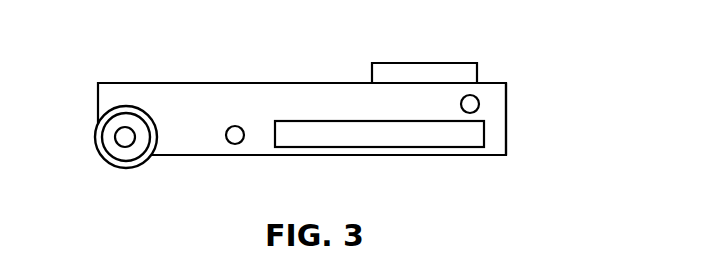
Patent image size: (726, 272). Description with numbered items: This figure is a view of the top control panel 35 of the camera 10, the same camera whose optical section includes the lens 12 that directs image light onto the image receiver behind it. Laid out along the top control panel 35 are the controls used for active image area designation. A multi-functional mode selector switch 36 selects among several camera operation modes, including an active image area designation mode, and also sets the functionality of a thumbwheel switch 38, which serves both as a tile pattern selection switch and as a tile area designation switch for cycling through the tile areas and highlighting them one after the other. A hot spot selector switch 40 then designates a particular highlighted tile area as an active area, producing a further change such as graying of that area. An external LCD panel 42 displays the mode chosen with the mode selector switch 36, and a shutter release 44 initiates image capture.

The camera 10 is at (387, 157).
The lens 12 is at (478, 69).
The top control panel 35 is at (498, 117).
The multi-functional mode selector switch 36 is at (233, 145).
The thumbwheel switch 38 is at (143, 107).
The hot spot selector switch 40 is at (116, 139).
The external LCD panel 42 is at (453, 148).
The shutter release 44 is at (481, 105).